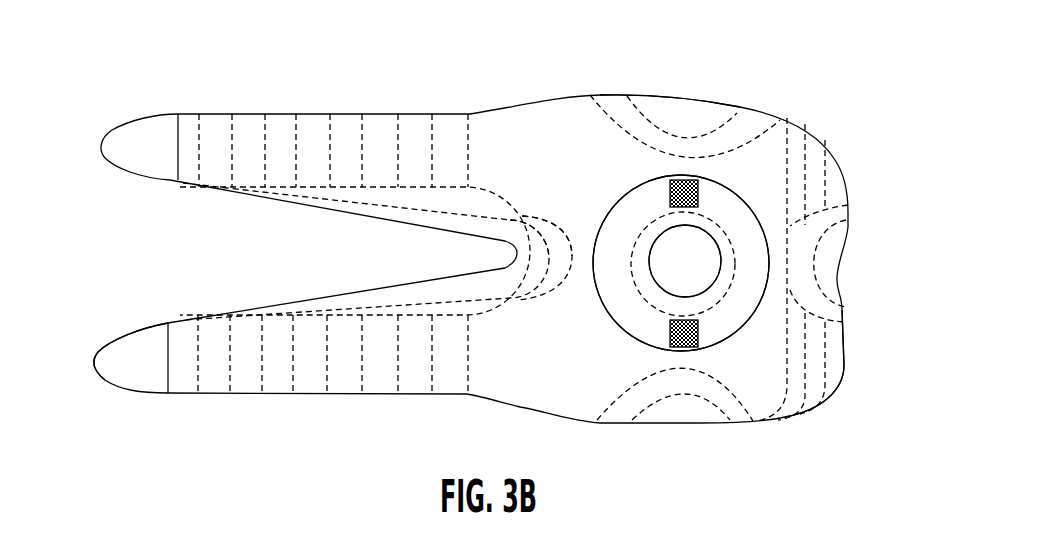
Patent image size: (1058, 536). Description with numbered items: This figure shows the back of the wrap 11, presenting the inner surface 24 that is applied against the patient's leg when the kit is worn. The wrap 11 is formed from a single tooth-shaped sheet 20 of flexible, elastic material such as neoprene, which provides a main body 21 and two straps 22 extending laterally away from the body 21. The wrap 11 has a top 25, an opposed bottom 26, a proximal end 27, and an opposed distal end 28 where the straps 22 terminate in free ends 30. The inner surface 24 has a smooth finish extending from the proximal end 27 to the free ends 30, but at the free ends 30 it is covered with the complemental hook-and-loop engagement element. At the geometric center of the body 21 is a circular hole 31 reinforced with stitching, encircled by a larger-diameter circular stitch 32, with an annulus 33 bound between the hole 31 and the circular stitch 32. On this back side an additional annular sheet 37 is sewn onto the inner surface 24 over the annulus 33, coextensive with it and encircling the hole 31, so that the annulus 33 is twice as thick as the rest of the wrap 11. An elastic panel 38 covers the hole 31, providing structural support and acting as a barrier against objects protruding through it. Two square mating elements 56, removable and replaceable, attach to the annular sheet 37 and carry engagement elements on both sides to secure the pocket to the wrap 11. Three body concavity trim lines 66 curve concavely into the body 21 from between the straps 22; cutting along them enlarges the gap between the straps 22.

The wrap 11 is at (860, 109).
The tooth-shaped sheet 20 is at (527, 120).
The main body 21 is at (695, 95).
The straps 22 is at (252, 212).
The inner surface 24 is at (566, 378).
The top 25 is at (650, 97).
The bottom 26 is at (655, 425).
The proximal end 27 is at (843, 362).
The distal end 28 is at (95, 364).
The free ends 30 is at (167, 187).
The circular hole 31 is at (688, 260).
The circular stitch 32 is at (747, 211).
The annulus 33 is at (732, 308).
The annular sheet 37 is at (633, 322).
The elastic panel 38 is at (667, 270).
The mating elements 56 is at (668, 195).
The body concavity trim lines 66 is at (523, 224).